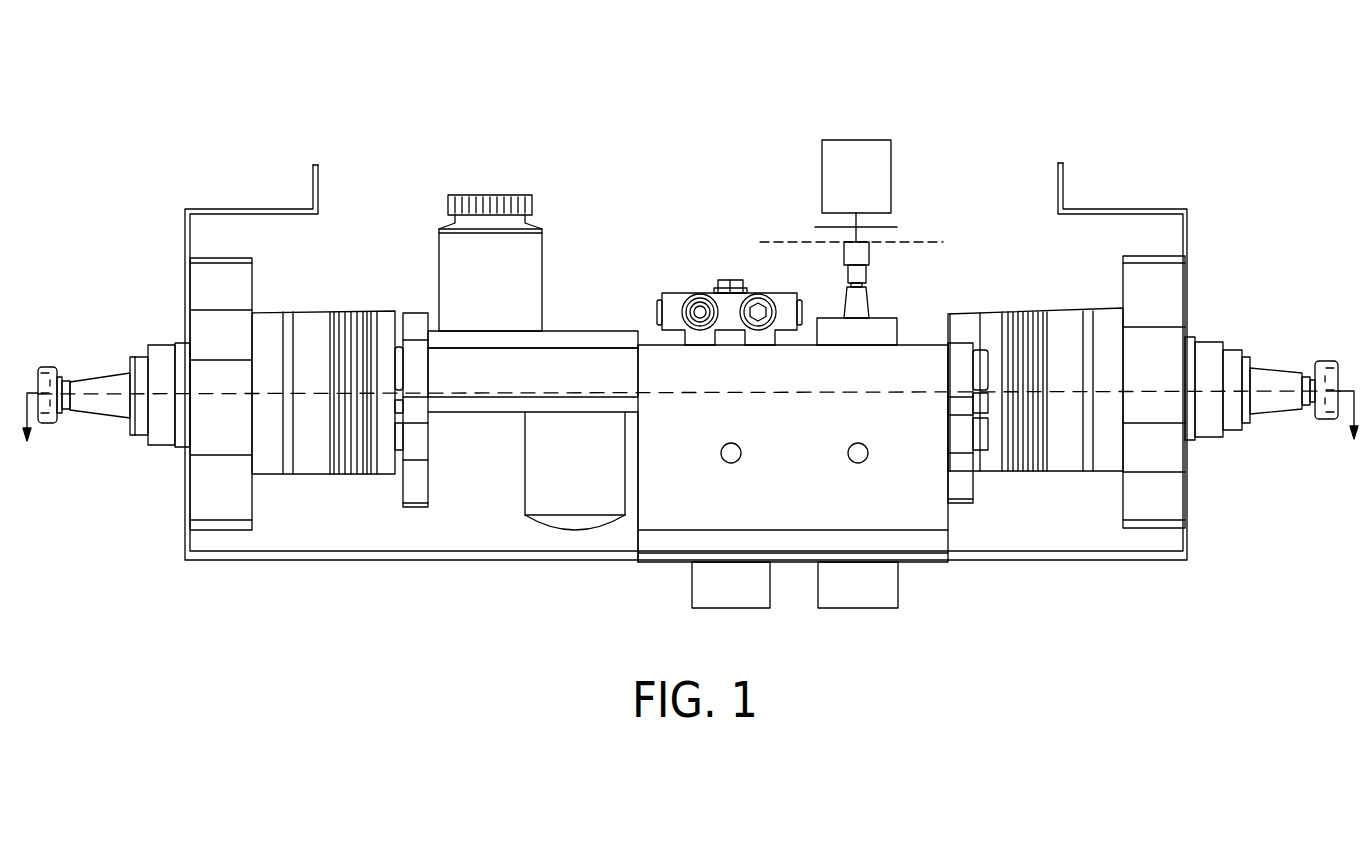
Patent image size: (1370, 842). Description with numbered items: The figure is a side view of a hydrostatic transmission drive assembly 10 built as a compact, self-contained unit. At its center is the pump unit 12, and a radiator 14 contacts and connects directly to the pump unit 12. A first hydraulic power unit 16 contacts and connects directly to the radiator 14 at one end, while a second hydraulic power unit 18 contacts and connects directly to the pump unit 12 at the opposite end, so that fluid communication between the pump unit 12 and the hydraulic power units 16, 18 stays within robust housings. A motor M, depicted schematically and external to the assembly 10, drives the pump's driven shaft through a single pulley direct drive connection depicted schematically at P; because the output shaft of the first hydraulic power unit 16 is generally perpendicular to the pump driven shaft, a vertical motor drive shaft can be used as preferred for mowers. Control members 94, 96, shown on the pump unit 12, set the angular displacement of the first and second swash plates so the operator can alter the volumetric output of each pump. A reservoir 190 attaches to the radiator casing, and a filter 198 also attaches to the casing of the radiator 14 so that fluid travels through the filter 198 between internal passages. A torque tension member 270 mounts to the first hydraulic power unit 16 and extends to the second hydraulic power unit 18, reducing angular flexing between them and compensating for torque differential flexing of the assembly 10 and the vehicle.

The drive assembly 10 is at (710, 84).
The pump unit 12 is at (656, 545).
The radiator 14 is at (580, 357).
The first hydraulic power unit 16 is at (316, 320).
The second hydraulic power unit 18 is at (1070, 318).
The control member 94 is at (858, 463).
The control member 96 is at (731, 463).
The reservoir 190 is at (536, 258).
The filter 198 is at (534, 486).
The torque tension member 270 is at (402, 562).
The motor M is at (891, 167).
The pulley direct drive connection P is at (935, 240).